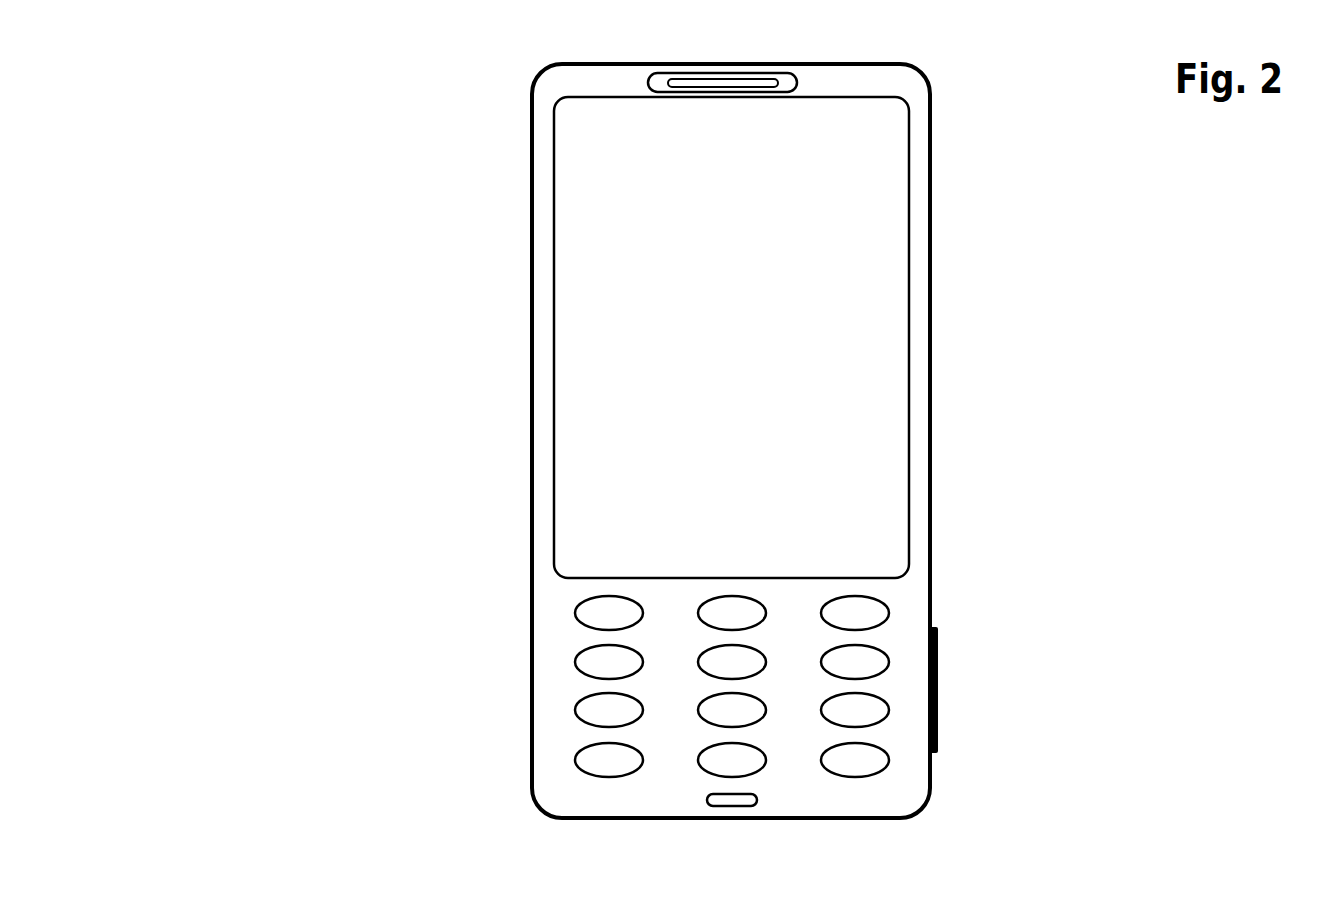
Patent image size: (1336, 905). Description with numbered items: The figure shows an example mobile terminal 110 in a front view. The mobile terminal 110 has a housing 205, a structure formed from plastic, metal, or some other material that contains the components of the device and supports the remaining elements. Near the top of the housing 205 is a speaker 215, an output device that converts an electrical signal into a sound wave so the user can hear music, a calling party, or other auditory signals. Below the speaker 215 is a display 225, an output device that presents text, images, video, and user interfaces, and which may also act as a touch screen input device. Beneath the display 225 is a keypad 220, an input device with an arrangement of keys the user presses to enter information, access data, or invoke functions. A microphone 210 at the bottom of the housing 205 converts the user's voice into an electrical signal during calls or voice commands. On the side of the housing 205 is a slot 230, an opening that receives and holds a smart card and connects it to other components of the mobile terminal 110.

The mobile terminal 110 is at (294, 78).
The housing 205 is at (532, 365).
The microphone 210 is at (756, 802).
The speaker 215 is at (797, 86).
The keypad 220 is at (517, 598).
The display 225 is at (895, 313).
The slot 230 is at (938, 665).